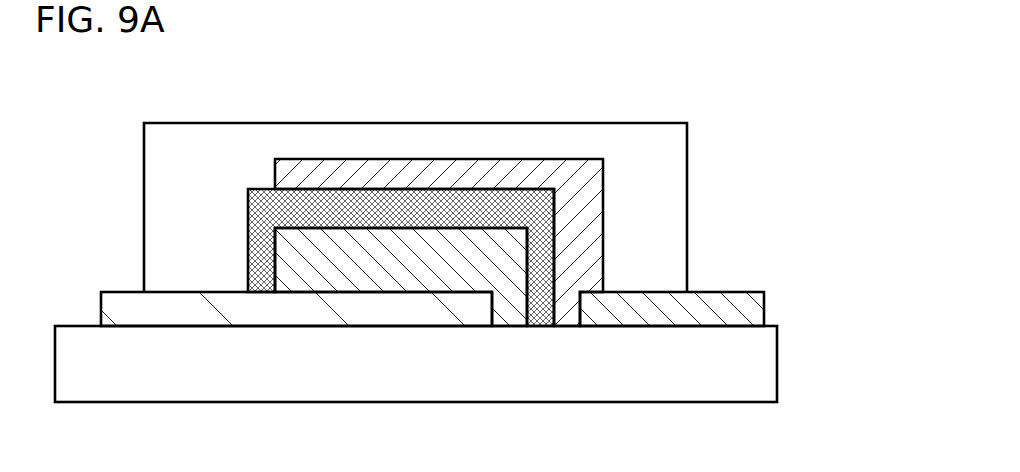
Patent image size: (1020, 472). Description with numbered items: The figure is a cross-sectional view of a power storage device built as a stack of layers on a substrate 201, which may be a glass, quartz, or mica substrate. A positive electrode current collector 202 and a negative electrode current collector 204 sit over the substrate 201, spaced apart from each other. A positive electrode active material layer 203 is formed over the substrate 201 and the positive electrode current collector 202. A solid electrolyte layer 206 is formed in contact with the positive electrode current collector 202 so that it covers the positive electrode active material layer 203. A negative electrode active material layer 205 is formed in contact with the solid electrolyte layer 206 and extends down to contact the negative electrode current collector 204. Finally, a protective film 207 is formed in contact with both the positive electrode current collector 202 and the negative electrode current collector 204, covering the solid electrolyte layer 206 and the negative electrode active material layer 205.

The substrate 201 is at (753, 392).
The positive electrode current collector 202 is at (384, 308).
The positive electrode active material layer 203 is at (513, 313).
The negative electrode current collector 204 is at (653, 310).
The negative electrode active material layer 205 is at (465, 166).
The solid electrolyte layer 206 is at (369, 196).
The protective film 207 is at (643, 141).